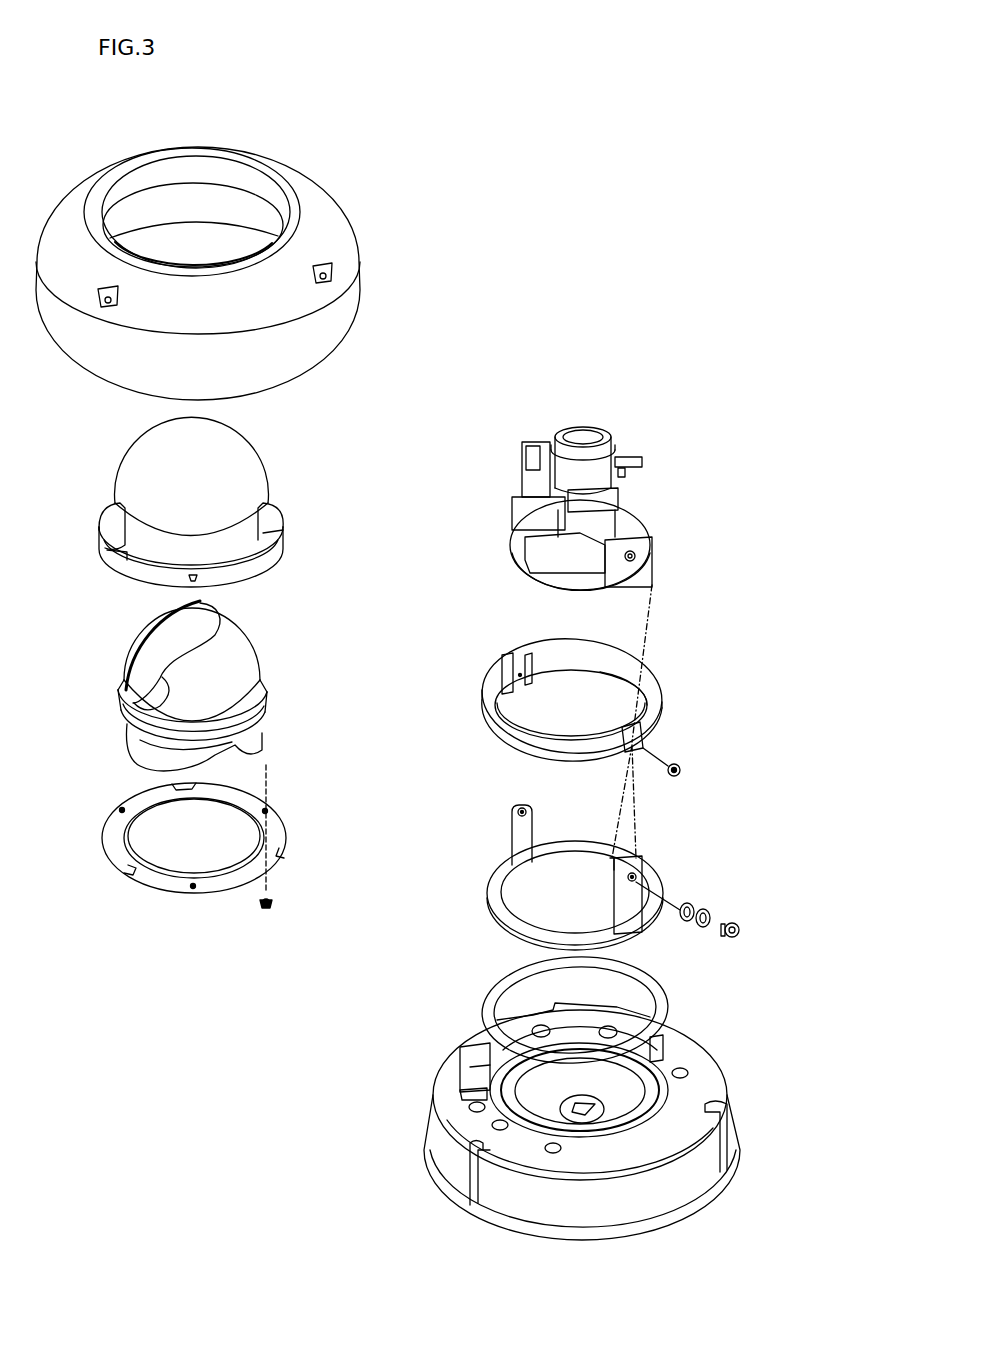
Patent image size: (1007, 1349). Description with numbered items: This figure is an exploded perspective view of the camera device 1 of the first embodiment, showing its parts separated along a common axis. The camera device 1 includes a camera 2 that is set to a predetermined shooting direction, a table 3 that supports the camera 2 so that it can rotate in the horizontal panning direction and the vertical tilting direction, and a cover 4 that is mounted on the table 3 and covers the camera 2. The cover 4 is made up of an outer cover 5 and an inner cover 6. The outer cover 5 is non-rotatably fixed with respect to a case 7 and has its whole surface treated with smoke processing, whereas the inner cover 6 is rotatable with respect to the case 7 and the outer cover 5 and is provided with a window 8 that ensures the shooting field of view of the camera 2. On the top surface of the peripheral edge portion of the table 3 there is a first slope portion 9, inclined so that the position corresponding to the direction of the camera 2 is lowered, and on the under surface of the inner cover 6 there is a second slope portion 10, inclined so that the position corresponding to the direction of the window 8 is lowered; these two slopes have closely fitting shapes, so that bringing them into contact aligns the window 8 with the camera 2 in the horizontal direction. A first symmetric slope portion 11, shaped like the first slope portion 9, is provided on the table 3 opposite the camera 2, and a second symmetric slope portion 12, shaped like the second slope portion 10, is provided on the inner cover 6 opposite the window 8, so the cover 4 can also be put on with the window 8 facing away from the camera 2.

The camera device 1 is at (628, 114).
The camera 2 is at (597, 430).
The table 3 is at (790, 534).
The cover 4 is at (57, 408).
The outer cover 5 is at (258, 455).
The inner cover 6 is at (258, 658).
The case 7 is at (325, 183).
The window 8 is at (153, 630).
The first slope portion 9 is at (505, 740).
The second slope portion 10 is at (150, 770).
The first symmetric slope portion 11 is at (645, 673).
The second symmetric slope portion 12 is at (252, 757).